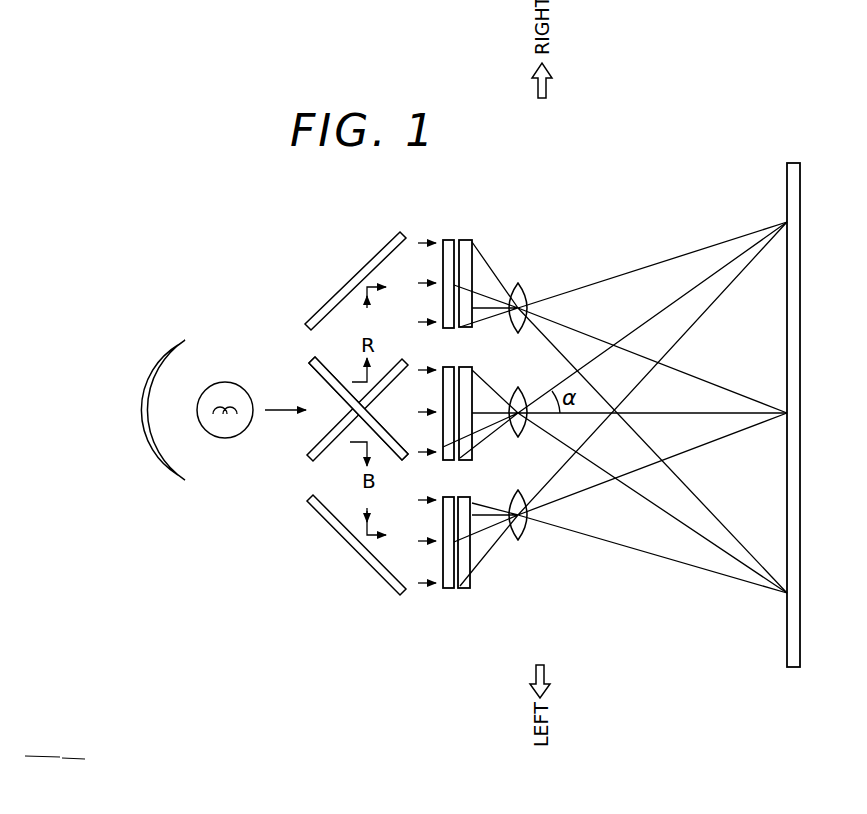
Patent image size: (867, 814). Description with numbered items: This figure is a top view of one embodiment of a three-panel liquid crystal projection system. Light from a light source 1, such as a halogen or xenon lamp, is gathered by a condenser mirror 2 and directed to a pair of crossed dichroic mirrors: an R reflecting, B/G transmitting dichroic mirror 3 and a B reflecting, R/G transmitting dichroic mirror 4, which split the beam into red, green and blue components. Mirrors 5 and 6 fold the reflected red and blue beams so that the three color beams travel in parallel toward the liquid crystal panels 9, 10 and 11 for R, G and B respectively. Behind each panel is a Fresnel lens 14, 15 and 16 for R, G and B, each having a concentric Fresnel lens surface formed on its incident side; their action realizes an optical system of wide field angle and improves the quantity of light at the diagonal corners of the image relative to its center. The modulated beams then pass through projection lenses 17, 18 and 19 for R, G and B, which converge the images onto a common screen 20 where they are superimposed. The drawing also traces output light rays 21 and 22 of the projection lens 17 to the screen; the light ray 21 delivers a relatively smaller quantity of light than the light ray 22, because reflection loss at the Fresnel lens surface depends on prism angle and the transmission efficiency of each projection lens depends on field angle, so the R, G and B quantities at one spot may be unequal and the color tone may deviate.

The light source 1 is at (236, 381).
The condenser mirror 2 is at (169, 338).
The R reflecting, B/G transmitting dichroic mirror 3 is at (309, 460).
The B reflecting, R/G transmitting dichroic mirror 4 is at (311, 359).
The mirror 5 is at (375, 255).
The mirror 6 is at (328, 523).
The liquid crystal panel for R 9 is at (452, 240).
The liquid crystal panel for G 10 is at (445, 367).
The liquid crystal panel for B 11 is at (447, 588).
The Fresnel lens for R 14 is at (470, 240).
The Fresnel lens for G 15 is at (468, 367).
The Fresnel lens for B 16 is at (468, 588).
The projection lens for R 17 is at (525, 282).
The projection lens for G 18 is at (525, 395).
The projection lens for B 19 is at (523, 495).
The screen 20 is at (787, 647).
The output light ray 21 is at (715, 516).
The output light ray 22 is at (643, 268).